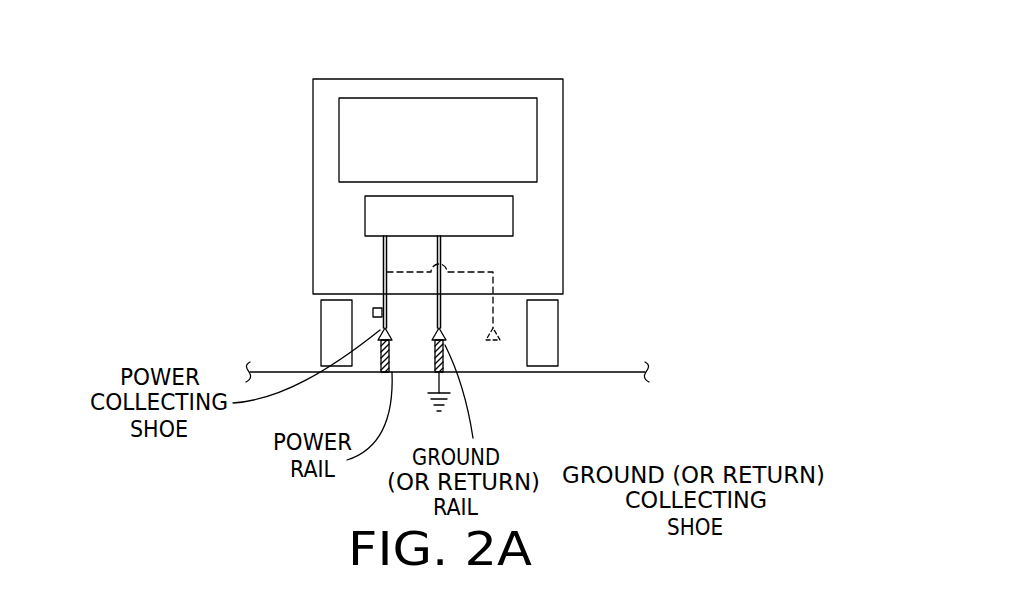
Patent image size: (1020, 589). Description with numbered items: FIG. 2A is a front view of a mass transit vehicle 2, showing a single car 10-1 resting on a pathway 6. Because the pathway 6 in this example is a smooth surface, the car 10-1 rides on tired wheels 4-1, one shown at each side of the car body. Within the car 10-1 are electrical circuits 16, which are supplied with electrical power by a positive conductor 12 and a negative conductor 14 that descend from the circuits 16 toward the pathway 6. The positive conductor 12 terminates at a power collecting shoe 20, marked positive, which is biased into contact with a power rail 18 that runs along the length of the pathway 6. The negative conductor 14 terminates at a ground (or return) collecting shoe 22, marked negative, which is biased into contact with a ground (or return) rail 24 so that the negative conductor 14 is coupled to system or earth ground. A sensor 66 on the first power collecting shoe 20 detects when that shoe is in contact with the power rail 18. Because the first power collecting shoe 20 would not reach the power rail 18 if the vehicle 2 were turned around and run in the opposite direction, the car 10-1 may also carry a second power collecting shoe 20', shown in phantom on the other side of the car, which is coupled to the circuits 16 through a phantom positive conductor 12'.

The vehicle 2 is at (537, 53).
The car 10-1 is at (563, 138).
The electrical circuits 16 is at (513, 208).
The positive conductor 12 is at (282, 263).
The positive conductor 12' is at (382, 258).
The negative conductor 14 is at (441, 283).
The tired wheels 4-1 is at (325, 307).
The sensor 66 is at (373, 312).
The power collecting shoe 20 is at (399, 320).
The second power collecting shoe 20' is at (550, 376).
The power rail 18 is at (380, 372).
The ground (or return) collecting shoe 22 is at (447, 332).
The ground (or return) rail 24 is at (434, 372).
The pathway 6 is at (630, 372).